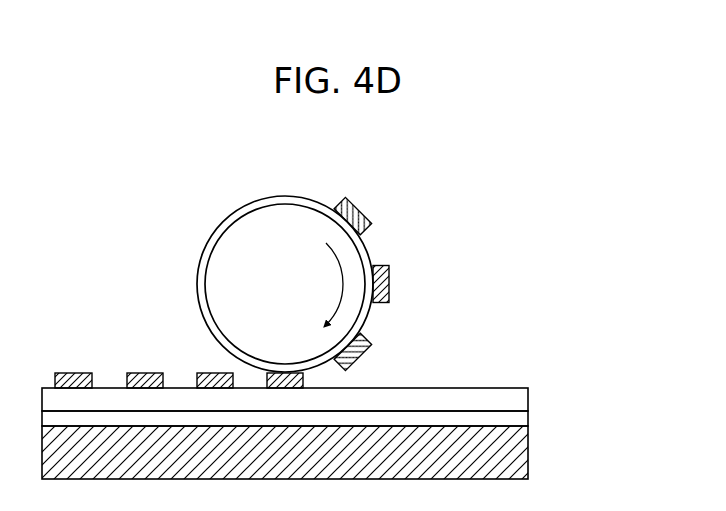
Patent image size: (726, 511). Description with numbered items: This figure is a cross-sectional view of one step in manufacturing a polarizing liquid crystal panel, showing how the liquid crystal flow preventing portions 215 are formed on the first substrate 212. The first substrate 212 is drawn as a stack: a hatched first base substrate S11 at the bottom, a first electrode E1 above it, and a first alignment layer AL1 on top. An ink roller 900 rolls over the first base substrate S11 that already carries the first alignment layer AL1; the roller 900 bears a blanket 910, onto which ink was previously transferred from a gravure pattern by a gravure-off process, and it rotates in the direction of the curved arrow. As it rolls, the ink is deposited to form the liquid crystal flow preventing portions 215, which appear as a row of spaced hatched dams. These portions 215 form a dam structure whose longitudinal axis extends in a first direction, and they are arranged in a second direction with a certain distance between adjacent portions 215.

The first substrate 212 is at (337, 432).
The first alignment layer AL1 is at (528, 395).
The first electrode E1 is at (528, 419).
The first base substrate S11 is at (314, 452).
The liquid crystal flow preventing portion 215 is at (73, 383).
The ink roller 900 is at (270, 213).
The blanket 910 is at (366, 252).